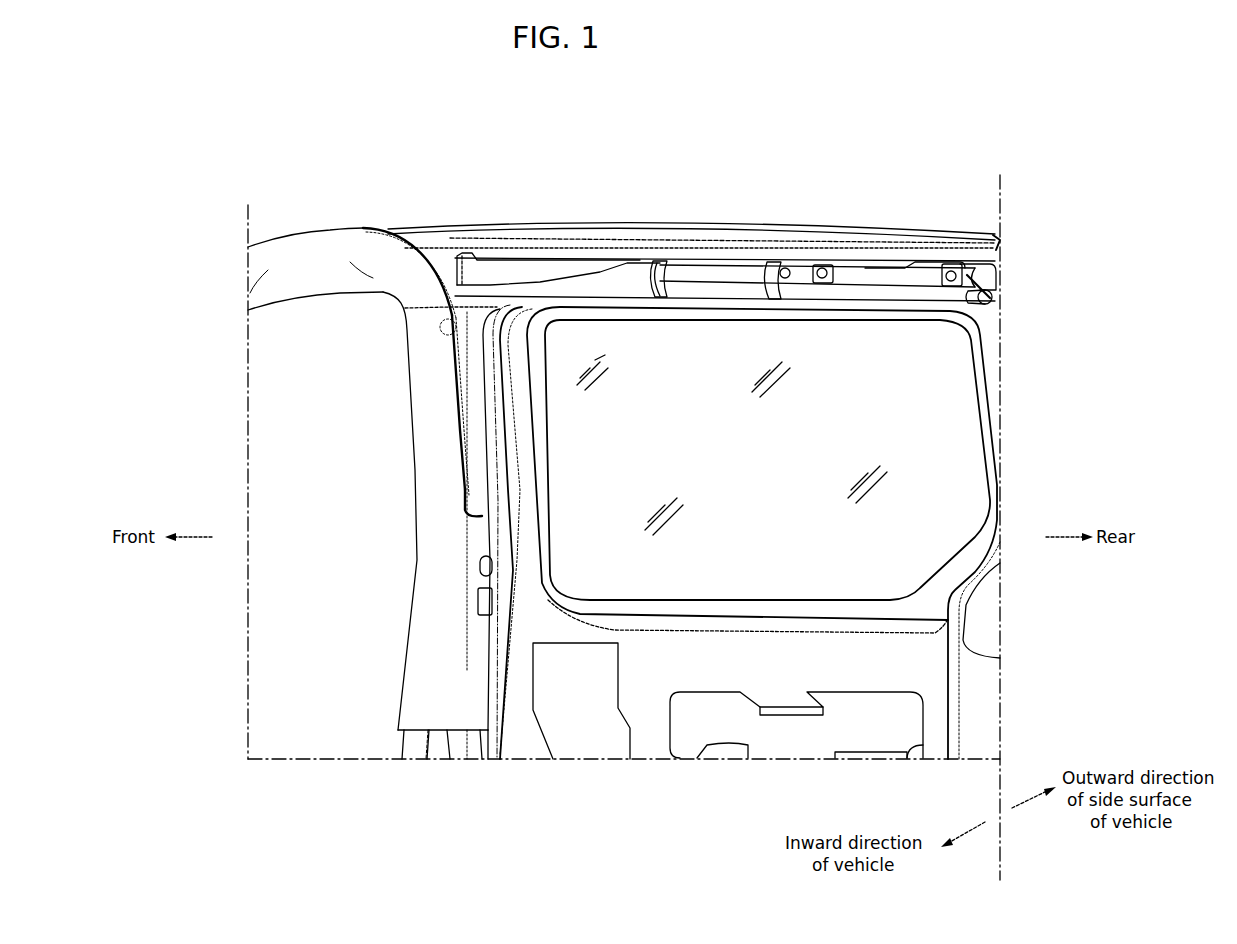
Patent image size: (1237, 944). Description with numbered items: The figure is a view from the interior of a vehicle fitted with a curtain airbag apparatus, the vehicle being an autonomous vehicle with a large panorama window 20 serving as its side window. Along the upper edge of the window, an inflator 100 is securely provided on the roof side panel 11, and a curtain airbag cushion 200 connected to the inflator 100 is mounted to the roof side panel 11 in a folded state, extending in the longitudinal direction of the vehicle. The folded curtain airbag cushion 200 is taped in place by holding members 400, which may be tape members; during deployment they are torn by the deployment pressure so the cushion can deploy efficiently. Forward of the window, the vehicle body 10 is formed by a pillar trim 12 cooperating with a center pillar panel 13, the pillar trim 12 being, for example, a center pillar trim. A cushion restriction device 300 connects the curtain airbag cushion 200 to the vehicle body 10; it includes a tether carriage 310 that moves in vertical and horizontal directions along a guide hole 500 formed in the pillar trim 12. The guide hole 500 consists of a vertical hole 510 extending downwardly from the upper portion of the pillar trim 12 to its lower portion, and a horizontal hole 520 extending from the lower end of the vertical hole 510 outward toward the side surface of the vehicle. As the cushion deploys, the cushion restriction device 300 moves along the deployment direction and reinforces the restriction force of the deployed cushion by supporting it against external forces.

The vehicle body 10 is at (479, 222).
The roof side panel 11 is at (860, 272).
The pillar trim 12 is at (440, 657).
The center pillar panel 13 is at (438, 745).
The panorama window 20 is at (953, 453).
The inflator 100 is at (720, 270).
The curtain airbag cushion 200 is at (563, 290).
The cushion restriction device 300 is at (372, 235).
The tether carriage 310 is at (445, 327).
The holding member 400 is at (650, 268).
The guide hole 500 is at (305, 457).
The vertical hole 510 is at (460, 411).
The horizontal hole 520 is at (480, 519).